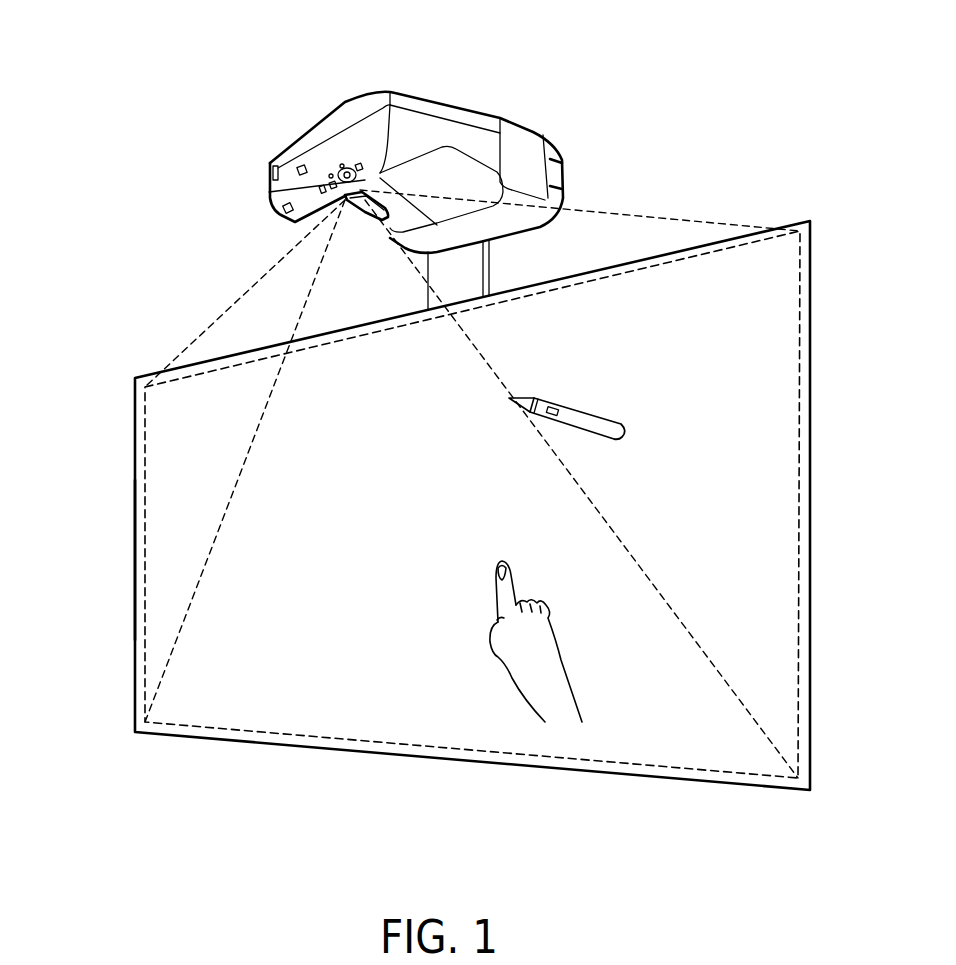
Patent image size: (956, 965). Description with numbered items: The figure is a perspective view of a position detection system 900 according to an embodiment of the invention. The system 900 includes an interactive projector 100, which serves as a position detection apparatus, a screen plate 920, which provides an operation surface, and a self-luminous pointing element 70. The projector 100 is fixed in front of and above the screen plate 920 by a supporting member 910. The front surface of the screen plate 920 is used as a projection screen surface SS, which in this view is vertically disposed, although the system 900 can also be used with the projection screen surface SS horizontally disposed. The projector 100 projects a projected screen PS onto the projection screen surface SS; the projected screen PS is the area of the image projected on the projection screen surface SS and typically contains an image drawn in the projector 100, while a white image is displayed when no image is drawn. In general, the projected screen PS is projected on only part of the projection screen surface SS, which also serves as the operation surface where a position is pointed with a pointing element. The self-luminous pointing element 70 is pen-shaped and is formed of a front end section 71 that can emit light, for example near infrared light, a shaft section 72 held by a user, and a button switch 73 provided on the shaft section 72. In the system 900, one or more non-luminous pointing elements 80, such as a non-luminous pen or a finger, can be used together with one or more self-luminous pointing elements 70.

The position detection system 900 is at (167, 137).
The interactive projector 100 is at (449, 103).
The supporting member 910 is at (490, 262).
The screen plate 920 is at (800, 221).
The projected screen PS is at (145, 433).
The projection screen surface SS is at (135, 557).
The self-luminous pointing element 70 is at (557, 416).
The front end section 71 is at (513, 397).
The shaft section 72 is at (603, 437).
The button switch 73 is at (548, 416).
The non-luminous pointing element 80 is at (497, 584).